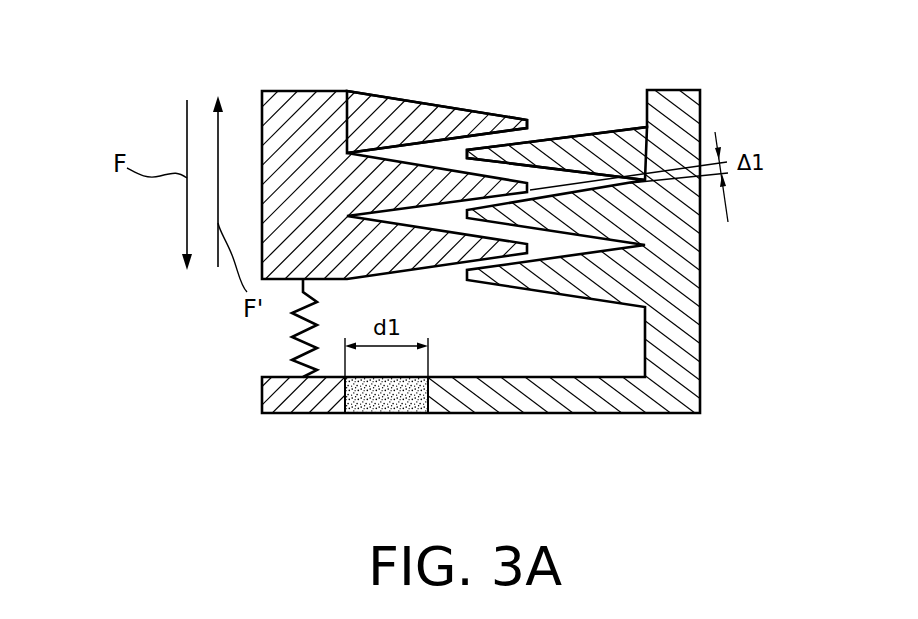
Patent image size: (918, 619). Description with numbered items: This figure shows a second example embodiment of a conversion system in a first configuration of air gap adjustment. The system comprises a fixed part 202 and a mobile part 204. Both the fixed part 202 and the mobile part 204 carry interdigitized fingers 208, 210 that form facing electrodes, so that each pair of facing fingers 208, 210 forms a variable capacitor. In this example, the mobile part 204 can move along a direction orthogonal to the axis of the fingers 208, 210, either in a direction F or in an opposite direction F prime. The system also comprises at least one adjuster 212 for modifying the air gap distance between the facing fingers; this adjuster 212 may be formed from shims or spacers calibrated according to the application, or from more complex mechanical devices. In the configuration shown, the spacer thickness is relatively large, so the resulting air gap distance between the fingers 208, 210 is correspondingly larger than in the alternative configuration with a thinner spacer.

The fixed part 202 is at (675, 323).
The mobile part 204 is at (313, 105).
The fingers of the fixed part 208 is at (603, 144).
The fingers of the mobile part 210 is at (426, 113).
The adjuster 212 is at (372, 422).